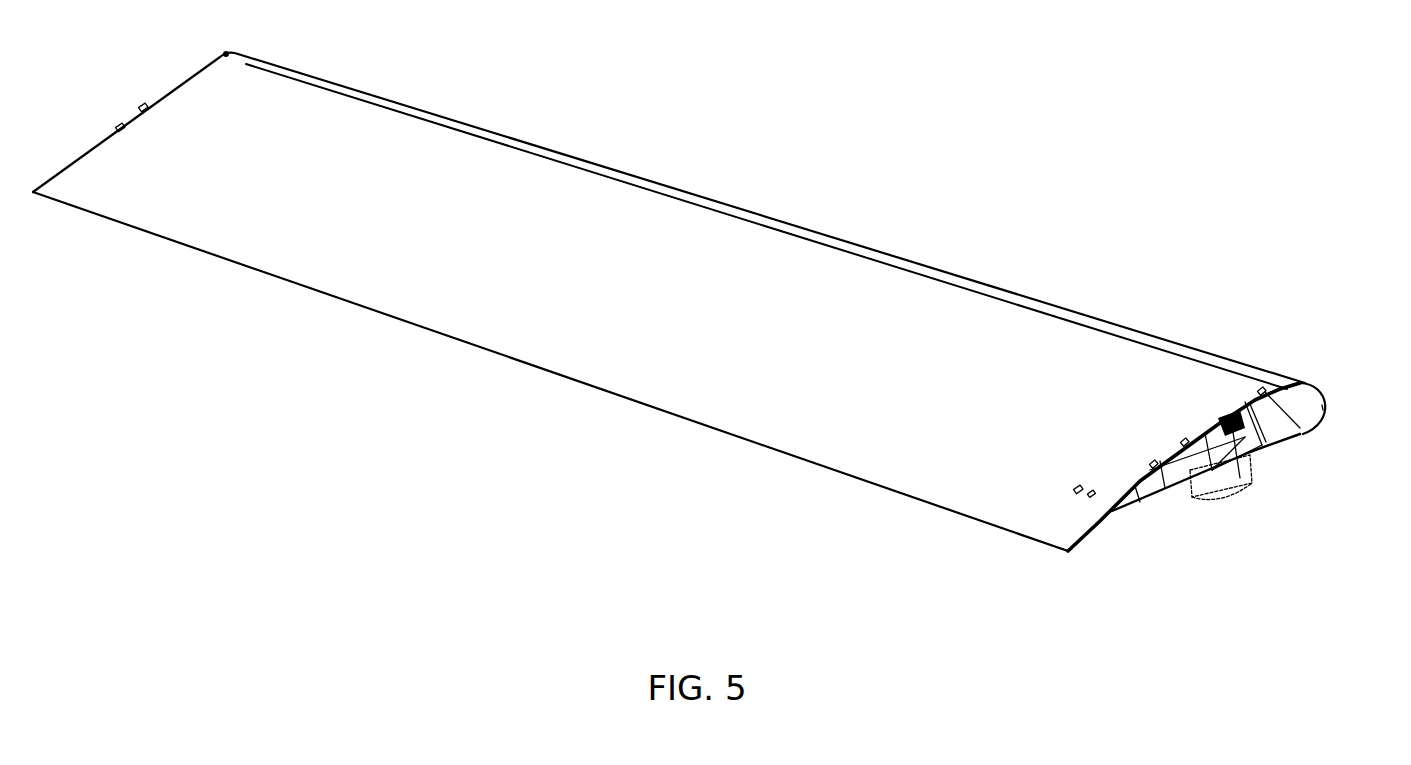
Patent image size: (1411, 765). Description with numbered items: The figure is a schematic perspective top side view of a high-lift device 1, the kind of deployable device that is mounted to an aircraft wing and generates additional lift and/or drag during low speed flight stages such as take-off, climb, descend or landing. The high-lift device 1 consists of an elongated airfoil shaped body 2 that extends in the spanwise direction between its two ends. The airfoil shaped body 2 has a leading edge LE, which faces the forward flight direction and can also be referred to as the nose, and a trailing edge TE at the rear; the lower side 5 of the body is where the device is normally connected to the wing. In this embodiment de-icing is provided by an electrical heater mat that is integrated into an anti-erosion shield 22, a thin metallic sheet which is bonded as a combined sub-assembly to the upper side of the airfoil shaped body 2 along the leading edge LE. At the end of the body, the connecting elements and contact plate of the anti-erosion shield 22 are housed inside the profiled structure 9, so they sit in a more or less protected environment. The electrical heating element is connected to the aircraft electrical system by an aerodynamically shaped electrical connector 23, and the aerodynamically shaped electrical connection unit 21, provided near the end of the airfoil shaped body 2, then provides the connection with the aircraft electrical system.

The high-lift device 1 is at (1138, 283).
The airfoil shaped body 2 is at (1297, 407).
The lower side 5 is at (1123, 500).
The profiled structure 9 is at (1262, 445).
The aerodynamically shaped electrical connection unit 21 is at (1207, 497).
The anti-erosion shield 22 is at (688, 221).
The aerodynamically shaped electrical connector 23 is at (1240, 478).
The leading edge LE is at (1322, 410).
The trailing edge TE is at (1052, 549).